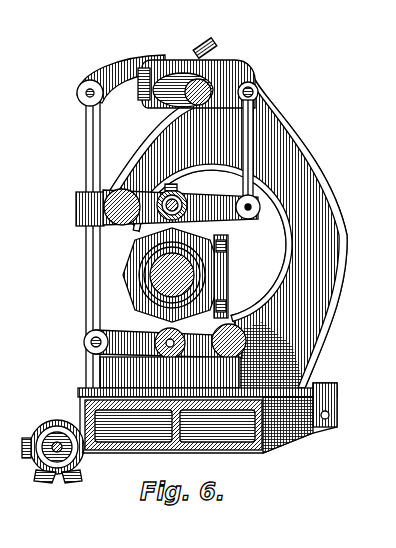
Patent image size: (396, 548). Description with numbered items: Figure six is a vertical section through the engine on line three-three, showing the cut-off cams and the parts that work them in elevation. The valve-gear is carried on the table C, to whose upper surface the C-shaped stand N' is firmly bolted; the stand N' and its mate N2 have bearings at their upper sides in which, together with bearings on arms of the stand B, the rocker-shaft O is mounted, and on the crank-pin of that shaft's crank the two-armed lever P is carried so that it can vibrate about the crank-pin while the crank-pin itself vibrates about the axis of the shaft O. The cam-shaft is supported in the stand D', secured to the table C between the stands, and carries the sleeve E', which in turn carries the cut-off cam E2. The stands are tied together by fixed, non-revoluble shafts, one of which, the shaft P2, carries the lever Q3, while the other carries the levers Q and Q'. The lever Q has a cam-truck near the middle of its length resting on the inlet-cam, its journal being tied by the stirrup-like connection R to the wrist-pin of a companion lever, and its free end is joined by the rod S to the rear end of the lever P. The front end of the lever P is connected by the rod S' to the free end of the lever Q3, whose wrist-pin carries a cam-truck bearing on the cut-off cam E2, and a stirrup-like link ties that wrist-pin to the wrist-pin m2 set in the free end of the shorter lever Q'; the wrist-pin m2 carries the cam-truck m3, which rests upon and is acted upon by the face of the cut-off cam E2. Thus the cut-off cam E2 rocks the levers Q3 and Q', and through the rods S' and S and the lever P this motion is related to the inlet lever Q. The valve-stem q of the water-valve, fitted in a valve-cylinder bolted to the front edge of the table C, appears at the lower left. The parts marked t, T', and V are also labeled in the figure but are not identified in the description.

The stand N' is at (231, 231).
The rod S' is at (82, 245).
The top arch bar t is at (121, 80).
The rocker-shaft O is at (196, 84).
The stand N2 is at (214, 46).
The two-armed lever P is at (244, 78).
The rod S is at (263, 152).
The bracket T' is at (94, 188).
The lever Q is at (181, 214).
The shorter lever Q' is at (129, 207).
The wrist-pin m2 is at (178, 195).
The cut-off cam E2 is at (172, 275).
The cam-truck m3 is at (154, 241).
The stand B is at (172, 275).
The sleeve E' is at (233, 276).
The stirrup-like connection R is at (228, 252).
The lever Q3 is at (163, 343).
The fixed shaft P2 is at (236, 322).
The stand D' is at (169, 372).
The table C is at (226, 453).
The hand wheel V is at (50, 422).
The valve-stem q is at (33, 462).